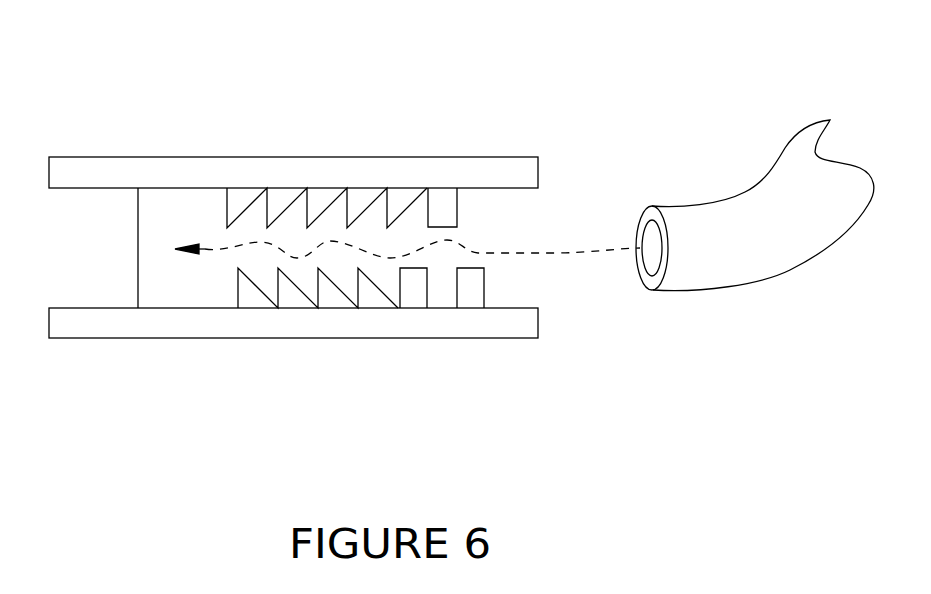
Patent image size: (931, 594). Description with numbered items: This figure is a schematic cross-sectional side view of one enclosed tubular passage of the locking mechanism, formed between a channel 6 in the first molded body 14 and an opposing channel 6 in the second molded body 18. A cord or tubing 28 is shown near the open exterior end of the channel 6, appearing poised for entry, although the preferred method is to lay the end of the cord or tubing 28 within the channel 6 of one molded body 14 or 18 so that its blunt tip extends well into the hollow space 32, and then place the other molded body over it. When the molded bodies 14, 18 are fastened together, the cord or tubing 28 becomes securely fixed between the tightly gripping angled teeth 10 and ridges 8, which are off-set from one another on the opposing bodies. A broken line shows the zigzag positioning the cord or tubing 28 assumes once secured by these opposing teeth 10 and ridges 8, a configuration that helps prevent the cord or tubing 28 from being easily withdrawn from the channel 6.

The channel 6 is at (558, 298).
The ridge 8 is at (427, 262).
The angled teeth 10 is at (290, 170).
The first molded body 14 is at (543, 138).
The second molded body 18 is at (511, 344).
The cord or tubing 28 is at (758, 183).
The hollow space 32 is at (154, 191).